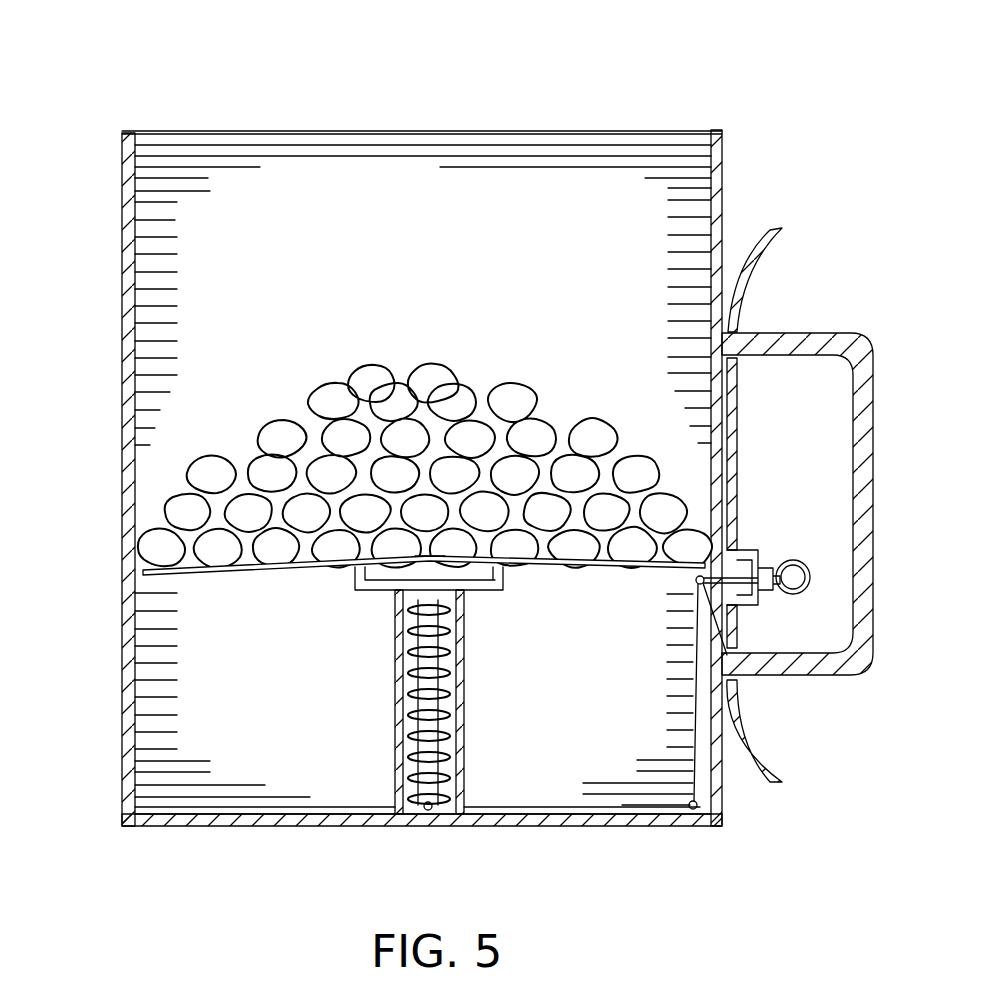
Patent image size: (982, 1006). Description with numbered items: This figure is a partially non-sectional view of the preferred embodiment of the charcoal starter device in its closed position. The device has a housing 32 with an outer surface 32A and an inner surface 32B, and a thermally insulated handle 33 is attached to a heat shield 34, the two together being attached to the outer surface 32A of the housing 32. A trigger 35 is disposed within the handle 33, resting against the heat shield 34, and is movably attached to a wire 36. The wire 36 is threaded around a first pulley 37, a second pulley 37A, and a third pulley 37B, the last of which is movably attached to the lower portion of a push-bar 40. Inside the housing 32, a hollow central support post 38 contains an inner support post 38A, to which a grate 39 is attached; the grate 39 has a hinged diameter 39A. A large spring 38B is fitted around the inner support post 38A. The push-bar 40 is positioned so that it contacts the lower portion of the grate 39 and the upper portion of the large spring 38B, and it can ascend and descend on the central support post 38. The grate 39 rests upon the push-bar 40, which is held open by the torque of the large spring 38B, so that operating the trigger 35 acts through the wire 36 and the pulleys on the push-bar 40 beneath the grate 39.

The housing 32 is at (374, 419).
The outer surface 32A is at (121, 240).
The inner surface 32B is at (135, 208).
The handle 33 is at (863, 337).
The heat shield 34 is at (765, 228).
The trigger 35 is at (793, 560).
The wire 36 is at (525, 808).
The pulley #1 37 is at (727, 657).
The pulley #2 37A is at (693, 810).
The pulley #3 37B is at (430, 811).
The central support post 38 is at (432, 733).
The inner support post 38A is at (418, 812).
The large spring 38B is at (447, 677).
The grate 39 is at (190, 575).
The hinged diameter of grate 39A is at (427, 565).
The push-bar 40 is at (487, 583).